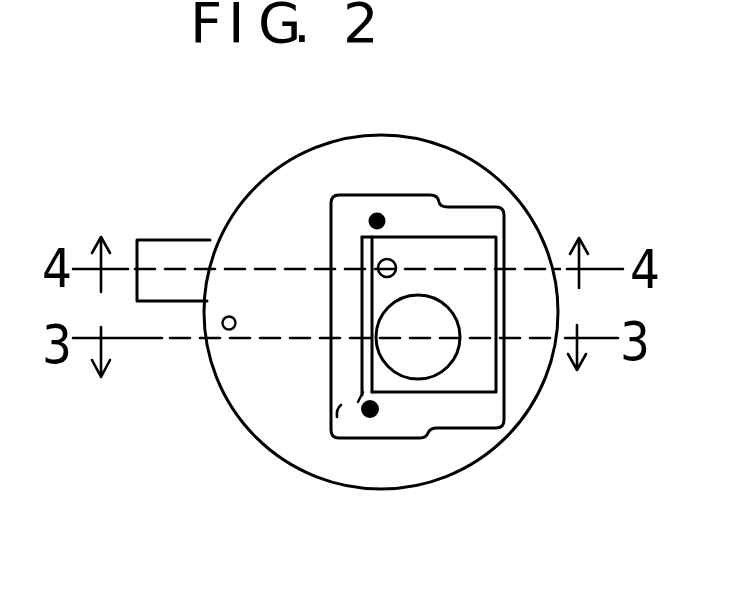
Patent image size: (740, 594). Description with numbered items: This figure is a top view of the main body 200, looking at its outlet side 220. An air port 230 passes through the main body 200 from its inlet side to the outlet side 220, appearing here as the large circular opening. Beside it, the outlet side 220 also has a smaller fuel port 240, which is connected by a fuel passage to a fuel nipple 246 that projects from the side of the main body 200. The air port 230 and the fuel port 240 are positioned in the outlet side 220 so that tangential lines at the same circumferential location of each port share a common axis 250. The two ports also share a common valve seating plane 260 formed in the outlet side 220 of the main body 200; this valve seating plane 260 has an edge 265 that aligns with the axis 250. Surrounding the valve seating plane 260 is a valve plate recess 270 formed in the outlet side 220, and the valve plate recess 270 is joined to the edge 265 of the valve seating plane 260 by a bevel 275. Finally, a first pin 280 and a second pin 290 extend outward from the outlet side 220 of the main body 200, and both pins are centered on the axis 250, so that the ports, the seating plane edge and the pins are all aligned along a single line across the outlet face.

The main body 200 is at (465, 156).
The outlet side 220 is at (320, 158).
The air port 230 is at (455, 310).
The fuel port 240 is at (392, 261).
The fuel nipple 246 is at (195, 240).
The axis 250 is at (372, 303).
The valve seating plane 260 is at (487, 375).
The edge 265 is at (363, 370).
The valve plate recess 270 is at (330, 418).
The bevel 275 is at (361, 395).
The first pin 280 is at (373, 213).
The second pin 290 is at (372, 417).